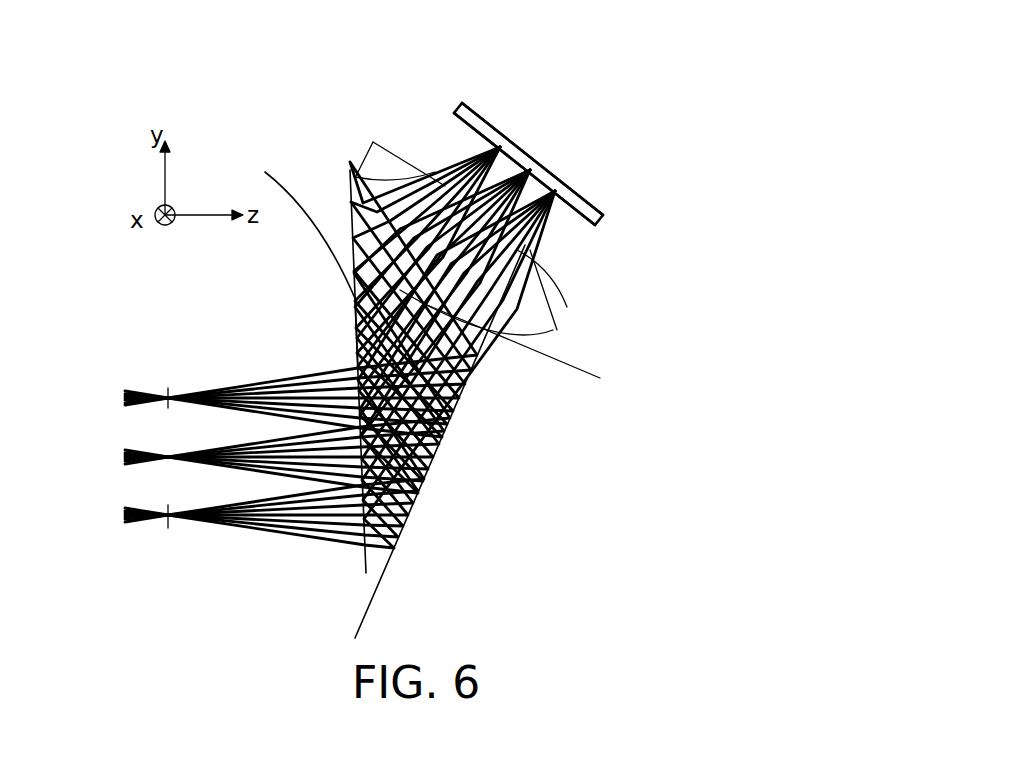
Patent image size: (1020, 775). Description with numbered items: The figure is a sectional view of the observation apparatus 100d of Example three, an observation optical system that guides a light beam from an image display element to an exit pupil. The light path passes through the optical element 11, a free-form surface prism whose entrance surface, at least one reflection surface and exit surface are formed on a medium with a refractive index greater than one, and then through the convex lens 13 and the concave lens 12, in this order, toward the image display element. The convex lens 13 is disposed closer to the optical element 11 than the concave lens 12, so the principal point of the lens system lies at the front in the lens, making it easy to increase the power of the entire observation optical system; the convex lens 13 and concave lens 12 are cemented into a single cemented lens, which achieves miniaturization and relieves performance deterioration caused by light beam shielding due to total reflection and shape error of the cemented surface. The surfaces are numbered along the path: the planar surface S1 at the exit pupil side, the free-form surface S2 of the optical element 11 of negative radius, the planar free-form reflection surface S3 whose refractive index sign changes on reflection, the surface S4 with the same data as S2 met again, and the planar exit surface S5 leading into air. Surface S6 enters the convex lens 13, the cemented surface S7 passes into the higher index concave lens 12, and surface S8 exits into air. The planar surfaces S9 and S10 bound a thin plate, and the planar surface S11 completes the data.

The observation apparatus 100d is at (716, 104).
The surface S1 is at (168, 393).
The surface S2 is at (350, 250).
The surface S3 is at (425, 497).
The surface S4 is at (354, 270).
The surface S5 is at (350, 217).
The surface S6 is at (373, 142).
The surface S7 is at (362, 168).
The surface S8 is at (435, 172).
The surface S9 is at (570, 216).
The surface S10 is at (597, 226).
The surface S11 is at (622, 217).
The optical element 11 is at (381, 396).
The concave lens 12 is at (479, 219).
The convex lens 13 is at (504, 228).